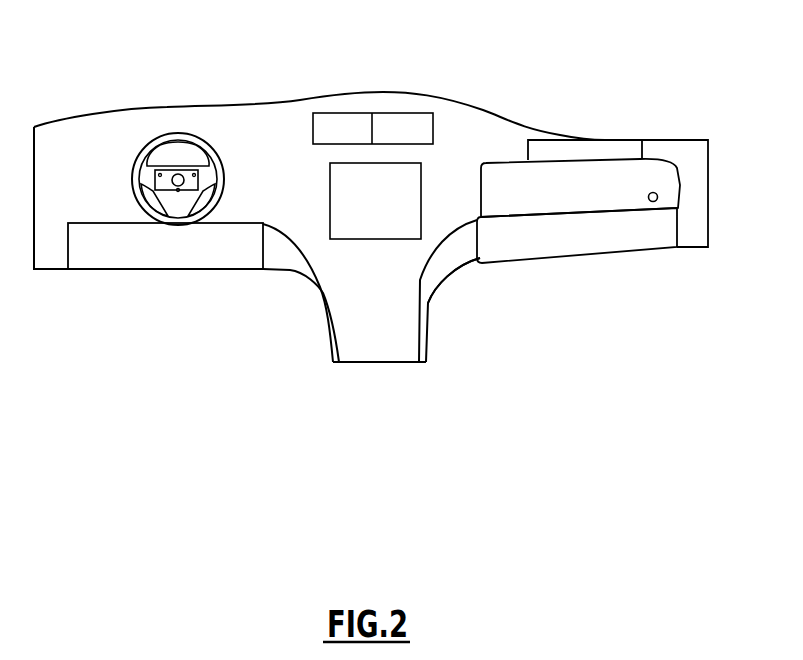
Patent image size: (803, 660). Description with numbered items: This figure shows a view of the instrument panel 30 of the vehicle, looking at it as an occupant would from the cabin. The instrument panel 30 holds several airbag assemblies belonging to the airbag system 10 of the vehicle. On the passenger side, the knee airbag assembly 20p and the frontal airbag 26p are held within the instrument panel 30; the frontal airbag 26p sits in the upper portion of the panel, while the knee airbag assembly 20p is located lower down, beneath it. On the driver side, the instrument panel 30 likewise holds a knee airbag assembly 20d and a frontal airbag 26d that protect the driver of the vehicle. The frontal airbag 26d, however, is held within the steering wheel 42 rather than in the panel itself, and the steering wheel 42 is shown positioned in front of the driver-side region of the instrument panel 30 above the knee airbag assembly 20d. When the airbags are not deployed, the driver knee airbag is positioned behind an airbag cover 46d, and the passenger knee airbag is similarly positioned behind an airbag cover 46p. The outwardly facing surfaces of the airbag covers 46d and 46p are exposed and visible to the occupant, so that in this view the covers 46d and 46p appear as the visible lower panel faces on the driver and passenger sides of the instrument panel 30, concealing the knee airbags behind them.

The airbag system 10 is at (525, 75).
The knee airbag assembly 20d is at (96, 283).
The knee airbag assembly 20p is at (617, 266).
The frontal airbag 26d is at (156, 160).
The frontal airbag 26p is at (613, 143).
The instrument panel 30 is at (695, 158).
The steering wheel 42 is at (197, 137).
The airbag cover 46d is at (182, 258).
The airbag cover 46p is at (660, 238).